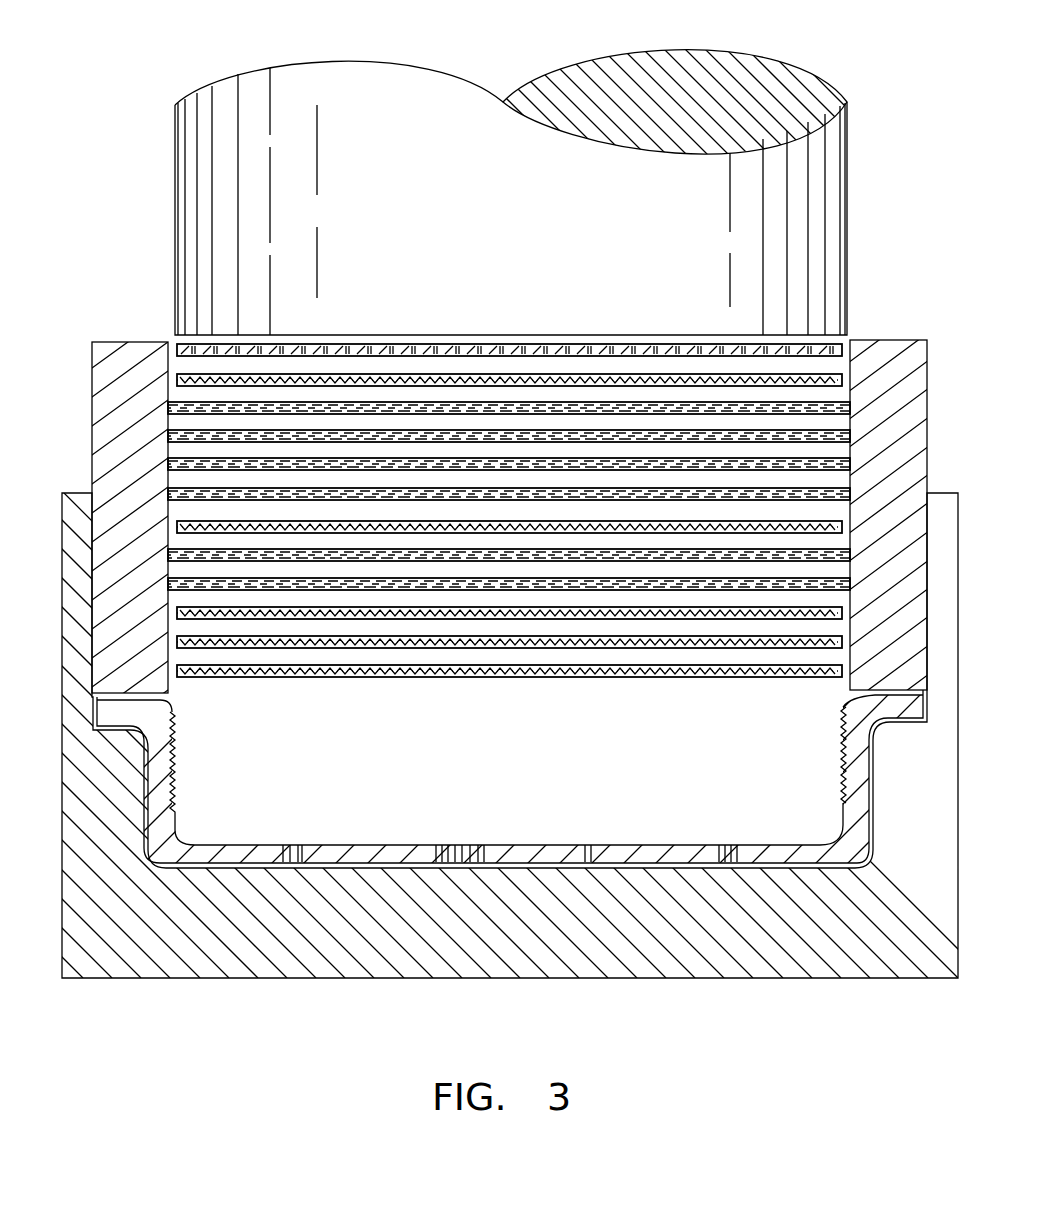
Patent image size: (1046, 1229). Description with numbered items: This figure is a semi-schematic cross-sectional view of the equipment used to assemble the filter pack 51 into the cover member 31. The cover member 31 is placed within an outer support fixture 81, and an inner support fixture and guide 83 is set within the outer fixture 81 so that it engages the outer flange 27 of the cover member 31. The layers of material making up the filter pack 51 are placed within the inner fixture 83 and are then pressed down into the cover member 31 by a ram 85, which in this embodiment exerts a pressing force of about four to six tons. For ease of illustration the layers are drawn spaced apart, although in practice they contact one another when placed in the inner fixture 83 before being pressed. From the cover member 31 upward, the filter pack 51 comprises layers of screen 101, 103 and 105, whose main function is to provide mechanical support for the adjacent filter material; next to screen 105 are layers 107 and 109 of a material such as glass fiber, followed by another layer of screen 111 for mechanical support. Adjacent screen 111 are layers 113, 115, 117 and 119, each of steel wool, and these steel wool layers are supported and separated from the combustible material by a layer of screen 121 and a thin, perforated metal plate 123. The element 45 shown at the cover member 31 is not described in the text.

The ram 85 is at (447, 85).
The inner support fixture and guide 83 is at (133, 342).
The outer support fixture 81 is at (532, 880).
The outer flange 27 is at (122, 710).
The cover member 31 is at (400, 843).
The spacer block 45 is at (293, 843).
The filter pack 51 is at (516, 700).
The layer of screen 101 is at (833, 672).
The layer of screen 103 is at (838, 650).
The layer of screen 105 is at (838, 620).
The layer of glass fiber material 107 is at (847, 584).
The layer of glass fiber material 109 is at (847, 555).
The layer of screen 111 is at (835, 533).
The layer of steel wool 113 is at (848, 496).
The layer of steel wool 115 is at (848, 463).
The layer of steel wool 117 is at (848, 435).
The layer of steel wool 119 is at (848, 398).
The layer of screen 121 is at (663, 374).
The thin perforated metal plate 123 is at (693, 344).